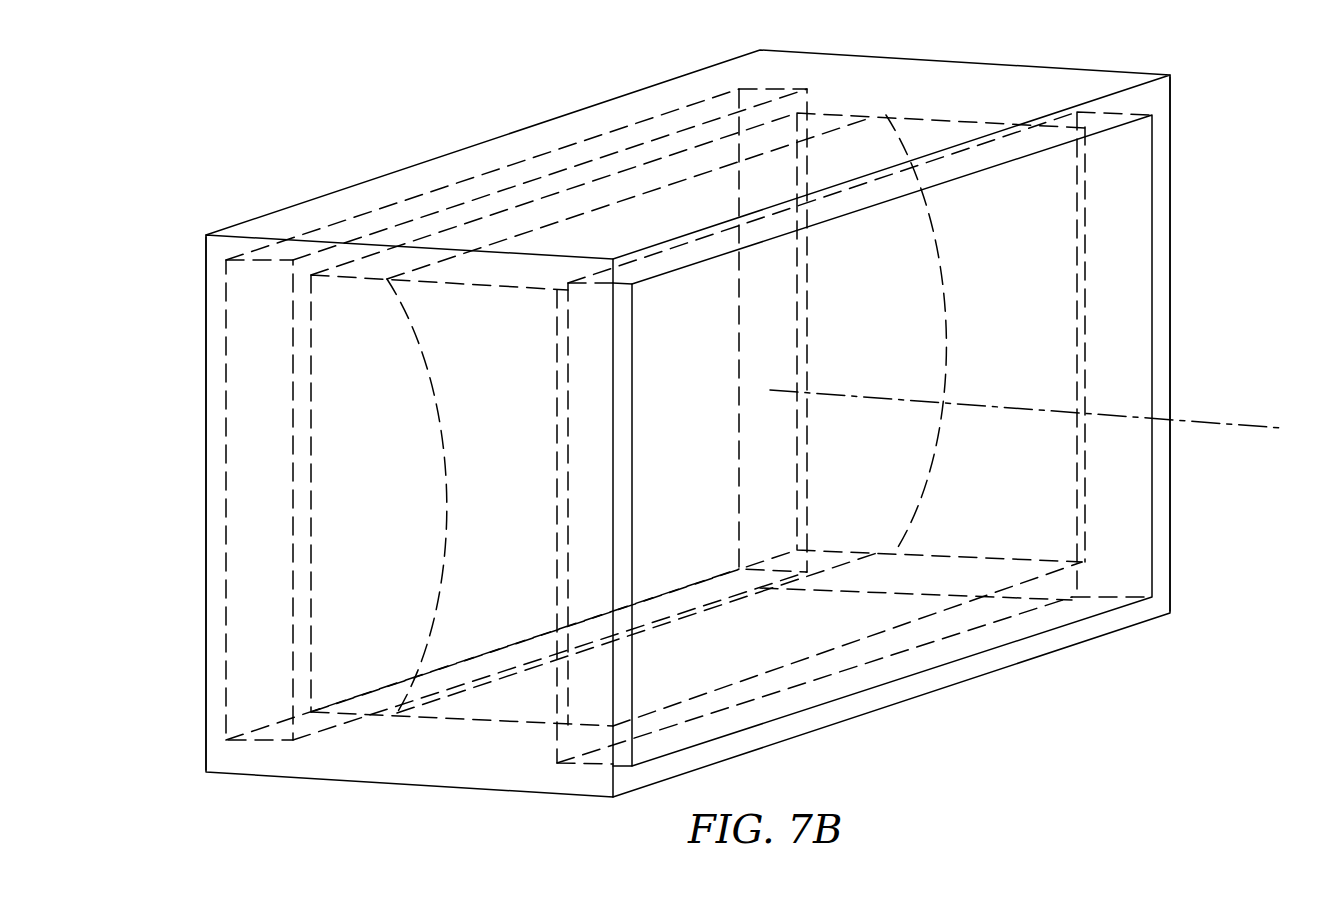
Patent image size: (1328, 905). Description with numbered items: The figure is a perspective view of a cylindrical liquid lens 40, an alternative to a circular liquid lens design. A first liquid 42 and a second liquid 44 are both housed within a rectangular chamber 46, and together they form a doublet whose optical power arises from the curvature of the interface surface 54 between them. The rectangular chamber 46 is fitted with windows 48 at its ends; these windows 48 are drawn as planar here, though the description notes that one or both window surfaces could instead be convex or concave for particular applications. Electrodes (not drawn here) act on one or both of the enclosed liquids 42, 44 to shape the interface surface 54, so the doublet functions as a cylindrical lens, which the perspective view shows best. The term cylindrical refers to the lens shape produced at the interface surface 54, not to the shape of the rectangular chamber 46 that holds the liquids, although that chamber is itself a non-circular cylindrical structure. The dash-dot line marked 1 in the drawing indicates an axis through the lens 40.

The cylindrical liquid lens 40 is at (323, 110).
The windows 48 is at (205, 308).
The rectangular chamber 46 is at (1152, 223).
The first liquid 42 is at (293, 500).
The interface surface 54 is at (407, 562).
The second liquid 44 is at (478, 607).
The optical axis 1 is at (1253, 423).